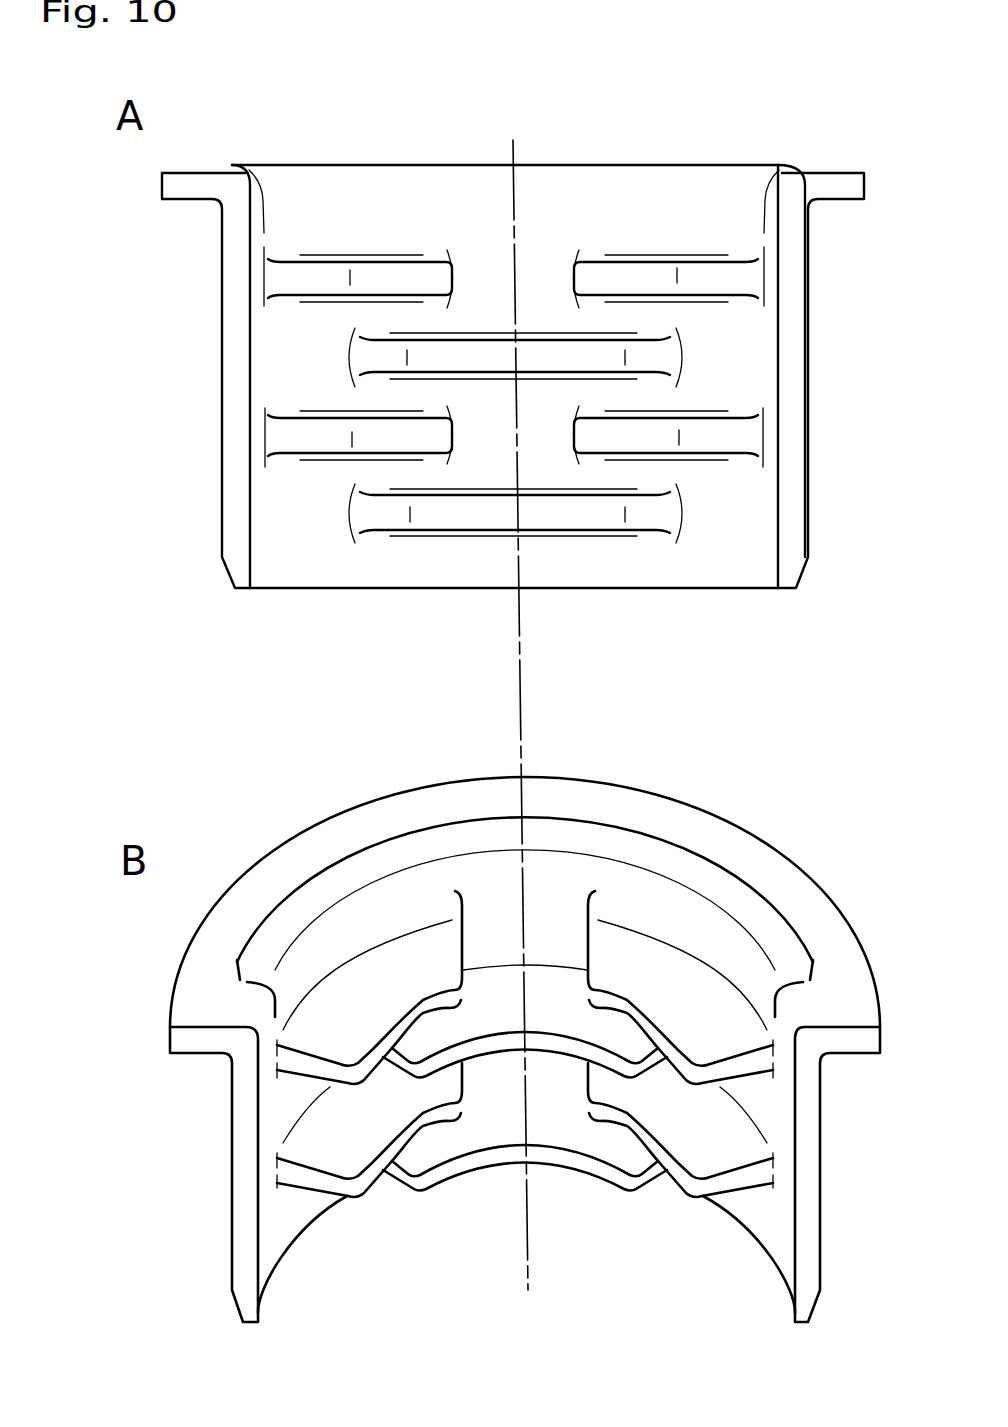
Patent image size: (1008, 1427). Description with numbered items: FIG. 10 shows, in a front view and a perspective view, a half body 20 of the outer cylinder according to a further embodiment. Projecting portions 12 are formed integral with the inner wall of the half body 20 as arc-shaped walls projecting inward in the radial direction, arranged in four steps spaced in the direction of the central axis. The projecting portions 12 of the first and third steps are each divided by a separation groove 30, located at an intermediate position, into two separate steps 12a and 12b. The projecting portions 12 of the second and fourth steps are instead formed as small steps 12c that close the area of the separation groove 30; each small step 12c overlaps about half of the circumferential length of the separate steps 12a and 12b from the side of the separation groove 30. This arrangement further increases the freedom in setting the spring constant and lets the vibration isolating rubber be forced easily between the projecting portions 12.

The half body 20 is at (282, 157).
The separation groove 30 is at (495, 280).
The projecting portion 12 is at (250, 273).
The separate step 12a is at (413, 270).
The separate step 12b is at (665, 267).
The small step 12c is at (443, 353).